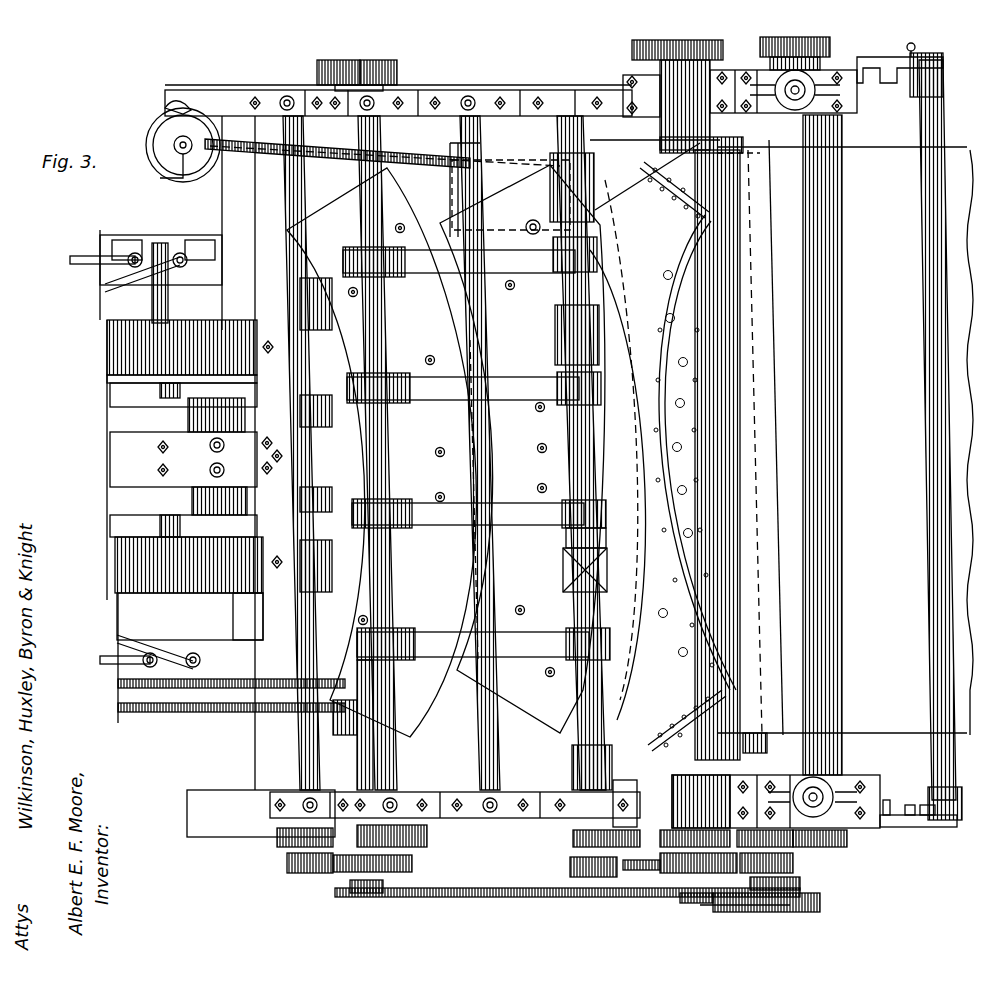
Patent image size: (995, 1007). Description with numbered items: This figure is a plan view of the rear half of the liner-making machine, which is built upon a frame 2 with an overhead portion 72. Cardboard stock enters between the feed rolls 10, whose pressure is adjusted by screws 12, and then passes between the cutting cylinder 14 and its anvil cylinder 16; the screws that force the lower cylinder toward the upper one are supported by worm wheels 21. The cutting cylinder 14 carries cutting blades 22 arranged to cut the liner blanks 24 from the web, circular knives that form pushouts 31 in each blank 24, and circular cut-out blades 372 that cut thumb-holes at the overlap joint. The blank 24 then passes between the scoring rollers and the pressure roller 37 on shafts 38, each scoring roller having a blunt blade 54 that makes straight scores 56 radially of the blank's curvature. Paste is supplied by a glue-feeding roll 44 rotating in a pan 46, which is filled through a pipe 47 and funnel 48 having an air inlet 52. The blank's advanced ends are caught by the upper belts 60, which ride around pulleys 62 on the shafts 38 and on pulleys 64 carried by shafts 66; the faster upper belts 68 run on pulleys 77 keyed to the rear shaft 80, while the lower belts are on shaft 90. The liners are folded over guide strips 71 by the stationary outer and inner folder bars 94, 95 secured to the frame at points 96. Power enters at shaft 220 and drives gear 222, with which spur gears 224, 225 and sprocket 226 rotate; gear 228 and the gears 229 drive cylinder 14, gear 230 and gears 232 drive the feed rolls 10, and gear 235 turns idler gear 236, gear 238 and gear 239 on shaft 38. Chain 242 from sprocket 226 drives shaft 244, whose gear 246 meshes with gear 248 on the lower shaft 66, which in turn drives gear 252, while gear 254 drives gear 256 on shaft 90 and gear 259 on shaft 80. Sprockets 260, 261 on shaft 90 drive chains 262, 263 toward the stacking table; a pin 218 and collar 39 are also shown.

The frame 2 is at (935, 205).
The feed rolls 10 is at (842, 133).
The screws 12 is at (800, 90).
The cutting cylinder 14 is at (722, 548).
The anvil cylinder 16 is at (760, 752).
The worm wheels 21 is at (945, 70).
The cutting blades 22 is at (690, 270).
The liner blanks 24 is at (430, 700).
The pushouts 31 is at (447, 450).
The pressure roller 37 is at (578, 158).
The shafts 38 is at (600, 768).
The bearing collar 39 is at (600, 382).
The glue-feeding roll 44 is at (500, 175).
The pan 46 is at (452, 152).
The pipe 47 is at (398, 158).
The funnel 48 is at (183, 160).
The air inlet 52 is at (168, 122).
The blunt blade 54 is at (575, 335).
The straight scores 56 is at (438, 370).
The upper belts 60 is at (520, 270).
The pulleys 62 is at (597, 418).
The pulleys 64 is at (410, 375).
The shafts 66 is at (385, 470).
The upper belts 68 is at (325, 330).
The guide strips 71 is at (232, 320).
The overhead portion 72 is at (258, 248).
The pulleys 77 is at (322, 398).
The rear shaft 80 is at (285, 200).
The shaft 90 is at (362, 893).
The outer folder bars 94 is at (105, 262).
The inner folder bars 95 is at (108, 290).
The points 96 is at (140, 255).
The pin 218 is at (917, 46).
The shaft 220 is at (720, 905).
The gear 222 is at (716, 904).
The spur gear 224 is at (795, 868).
The spur gear 225 is at (800, 852).
The sprocket 226 is at (800, 885).
The gear 228 is at (679, 905).
The gears 229 is at (632, 50).
The gear 230 is at (847, 838).
The gears 232 is at (764, 50).
The gear 235 is at (701, 801).
The idler gear 236 is at (640, 872).
The gear 238 is at (573, 838).
The gear 239 is at (570, 868).
The chain 242 is at (490, 897).
The shaft 244 is at (360, 740).
The gear 246 is at (322, 68).
The gear 248 is at (397, 72).
The gear 252 is at (427, 838).
The gear 254 is at (412, 864).
The gear 256 is at (300, 873).
The gear 259 is at (280, 840).
The sprocket 260 is at (335, 722).
The sprocket 261 is at (282, 665).
The chain 262 is at (225, 715).
The chain 263 is at (200, 720).
The circular cut-out blade 372 is at (705, 215).